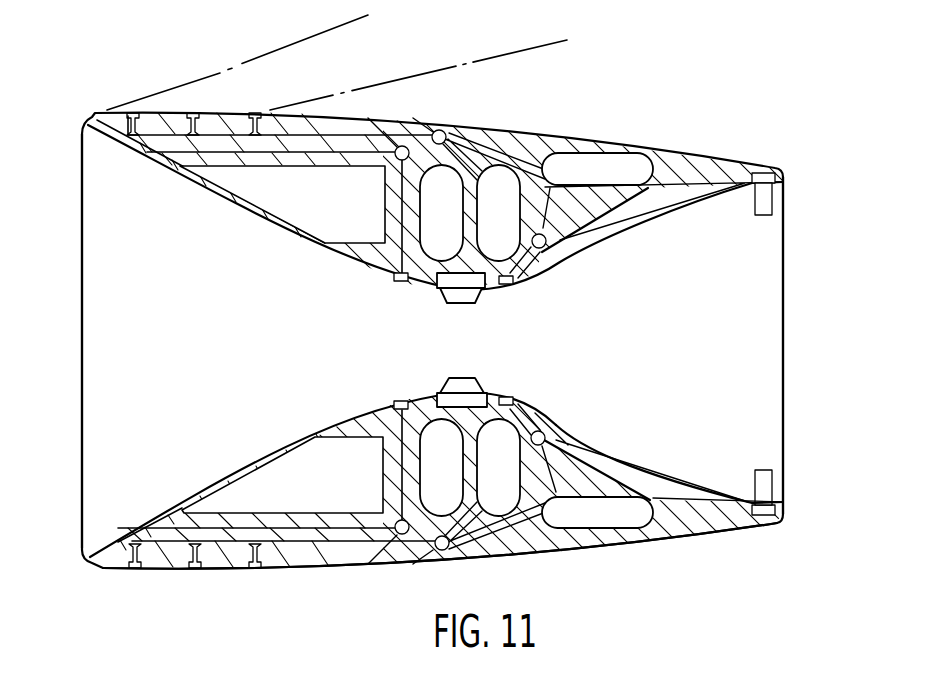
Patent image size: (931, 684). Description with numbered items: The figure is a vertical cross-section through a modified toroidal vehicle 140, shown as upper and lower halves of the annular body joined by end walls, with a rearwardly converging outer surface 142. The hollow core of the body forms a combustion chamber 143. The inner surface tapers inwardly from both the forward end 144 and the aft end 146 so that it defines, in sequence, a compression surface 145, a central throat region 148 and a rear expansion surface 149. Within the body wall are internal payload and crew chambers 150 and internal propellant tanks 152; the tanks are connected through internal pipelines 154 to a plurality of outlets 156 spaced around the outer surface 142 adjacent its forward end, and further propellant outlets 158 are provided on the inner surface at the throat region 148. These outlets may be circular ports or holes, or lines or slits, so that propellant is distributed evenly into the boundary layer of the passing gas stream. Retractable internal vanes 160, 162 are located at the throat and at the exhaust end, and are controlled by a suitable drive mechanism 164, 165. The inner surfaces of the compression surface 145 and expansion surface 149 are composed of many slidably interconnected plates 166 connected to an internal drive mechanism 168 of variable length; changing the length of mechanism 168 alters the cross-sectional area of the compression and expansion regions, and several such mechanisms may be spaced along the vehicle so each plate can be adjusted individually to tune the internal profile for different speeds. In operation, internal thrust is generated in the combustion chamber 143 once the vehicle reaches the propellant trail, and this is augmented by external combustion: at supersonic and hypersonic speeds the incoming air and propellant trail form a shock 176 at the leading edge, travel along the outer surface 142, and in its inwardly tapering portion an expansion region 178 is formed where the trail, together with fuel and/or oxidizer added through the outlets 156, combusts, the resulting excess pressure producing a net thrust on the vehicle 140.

The toroidal vehicle 140 is at (358, 566).
The outer surface 142 is at (597, 547).
The combustion chamber 143 is at (540, 373).
The forward end 144 is at (82, 232).
The compression surface 145 is at (248, 225).
The aft end 146 is at (786, 417).
The central throat region 148 is at (435, 392).
The rear expansion surface 149 is at (632, 460).
The payload and crew chambers 150 is at (333, 202).
The internal propellant tanks 152 is at (497, 178).
The internal pipelines 154 is at (372, 114).
The outlets 156 is at (197, 111).
The propellant outlets 158 is at (397, 284).
The retractable internal vane 160 is at (457, 303).
The retractable internal vane 162 is at (768, 195).
The drive mechanism 164 is at (485, 290).
The drive mechanism 165 is at (763, 173).
The slidably interconnected plates 166 is at (566, 258).
The internal drive mechanism 168 is at (643, 207).
The shock 176 is at (359, 76).
The expansion region 178 is at (623, 114).